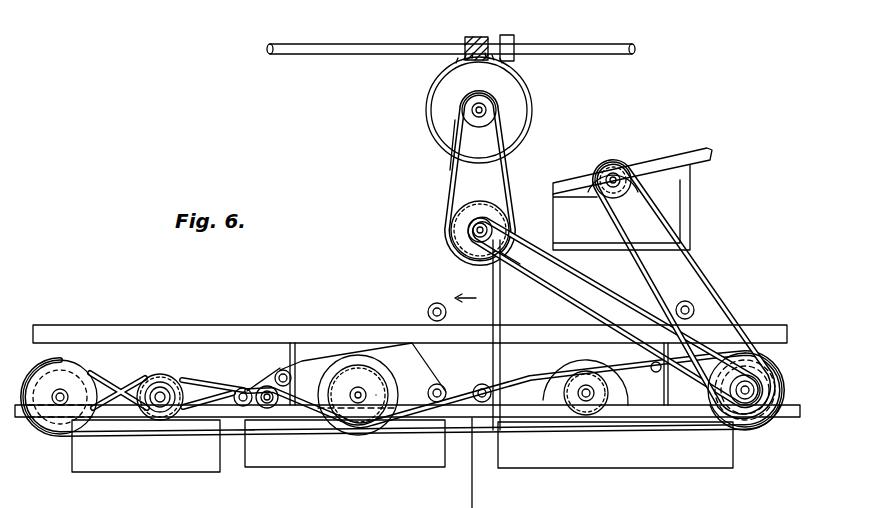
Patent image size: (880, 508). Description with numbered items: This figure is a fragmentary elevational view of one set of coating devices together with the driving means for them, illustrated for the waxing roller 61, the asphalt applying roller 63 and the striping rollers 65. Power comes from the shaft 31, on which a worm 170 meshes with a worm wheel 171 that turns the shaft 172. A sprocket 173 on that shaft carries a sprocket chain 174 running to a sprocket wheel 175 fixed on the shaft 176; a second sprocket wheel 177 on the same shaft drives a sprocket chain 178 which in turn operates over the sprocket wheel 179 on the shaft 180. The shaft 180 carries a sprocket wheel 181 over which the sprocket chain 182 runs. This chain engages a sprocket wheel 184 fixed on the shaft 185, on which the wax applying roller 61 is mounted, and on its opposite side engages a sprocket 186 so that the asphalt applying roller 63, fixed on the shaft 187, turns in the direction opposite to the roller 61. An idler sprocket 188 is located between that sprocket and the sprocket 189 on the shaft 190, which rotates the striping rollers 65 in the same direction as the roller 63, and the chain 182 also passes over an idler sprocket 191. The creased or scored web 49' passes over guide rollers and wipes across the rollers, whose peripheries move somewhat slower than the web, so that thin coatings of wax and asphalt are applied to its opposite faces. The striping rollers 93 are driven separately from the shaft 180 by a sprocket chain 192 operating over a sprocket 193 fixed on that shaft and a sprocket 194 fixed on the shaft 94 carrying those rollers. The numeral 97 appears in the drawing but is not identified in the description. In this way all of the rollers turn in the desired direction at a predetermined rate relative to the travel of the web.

The shaft 31 is at (560, 54).
The worm 170 is at (480, 36).
The worm wheel 171 is at (437, 120).
The shaft 172 is at (486, 108).
The sprocket 173 is at (463, 133).
The sprocket chain 174 is at (449, 185).
The sprocket wheel 175 is at (458, 229).
The shaft 176 is at (468, 233).
The sprocket wheel 177 is at (495, 238).
The sprocket chain 178 is at (503, 260).
The striping rollers 93 is at (613, 154).
The shaft 94 is at (609, 174).
The sprocket 194 is at (637, 198).
The sprocket chain 192 is at (700, 266).
The sprocket 193 is at (766, 356).
The shaft 180 is at (752, 385).
The sprocket wheel 179 is at (748, 405).
The sprocket wheel 181 is at (775, 422).
The web 49' is at (402, 364).
The roller 63 is at (382, 380).
The shaft 187 is at (357, 403).
The sprocket 186 is at (372, 413).
The idler sprocket 188 is at (268, 408).
The shaft 190 is at (165, 380).
The striping rollers 65 is at (173, 380).
The sprocket 189 is at (160, 412).
The idler sprocket 191 is at (58, 423).
The waxing roller 61 is at (628, 400).
The sprocket wheel 184 is at (594, 408).
The shaft 185 is at (587, 397).
The sprocket chain 182 is at (458, 402).
The frame rail 97 is at (407, 416).